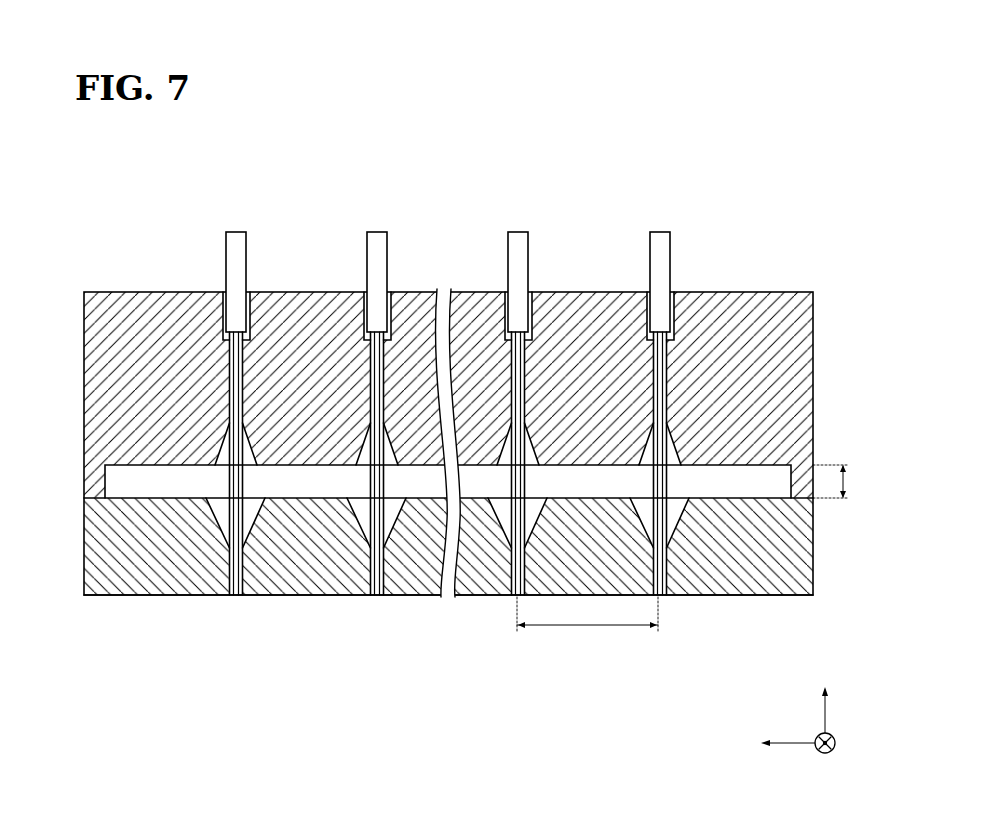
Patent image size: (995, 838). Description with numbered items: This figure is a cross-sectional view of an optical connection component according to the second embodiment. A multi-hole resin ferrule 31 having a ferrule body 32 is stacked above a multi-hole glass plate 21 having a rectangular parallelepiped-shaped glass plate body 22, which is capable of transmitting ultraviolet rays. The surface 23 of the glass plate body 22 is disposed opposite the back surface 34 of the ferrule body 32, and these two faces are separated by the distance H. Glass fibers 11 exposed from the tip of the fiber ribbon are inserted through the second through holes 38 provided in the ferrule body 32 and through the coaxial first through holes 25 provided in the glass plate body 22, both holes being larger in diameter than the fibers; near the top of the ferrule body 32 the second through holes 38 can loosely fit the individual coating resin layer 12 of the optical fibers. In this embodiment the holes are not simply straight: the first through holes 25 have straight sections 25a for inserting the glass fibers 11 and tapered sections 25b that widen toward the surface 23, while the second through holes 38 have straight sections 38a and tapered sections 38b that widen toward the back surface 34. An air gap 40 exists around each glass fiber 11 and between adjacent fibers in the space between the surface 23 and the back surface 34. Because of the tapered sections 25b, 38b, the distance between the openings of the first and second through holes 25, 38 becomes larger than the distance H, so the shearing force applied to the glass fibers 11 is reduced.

The glass fiber 11 is at (668, 578).
The individual coating resin layer 12 is at (238, 240).
The multi-hole glass plate 21 is at (116, 599).
The glass plate body 22 is at (104, 543).
The surface 23 is at (153, 497).
The first through hole 25 is at (433, 575).
The straight section 25a is at (233, 592).
The tapered section 25b is at (248, 512).
The multi-hole resin ferrule 31 is at (447, 474).
The ferrule body 32 is at (776, 364).
The back surface 34 is at (104, 470).
The second through hole 38 is at (389, 417).
The straight section 38a is at (228, 396).
The tapered section 38b is at (249, 452).
The air gap 40 is at (308, 488).